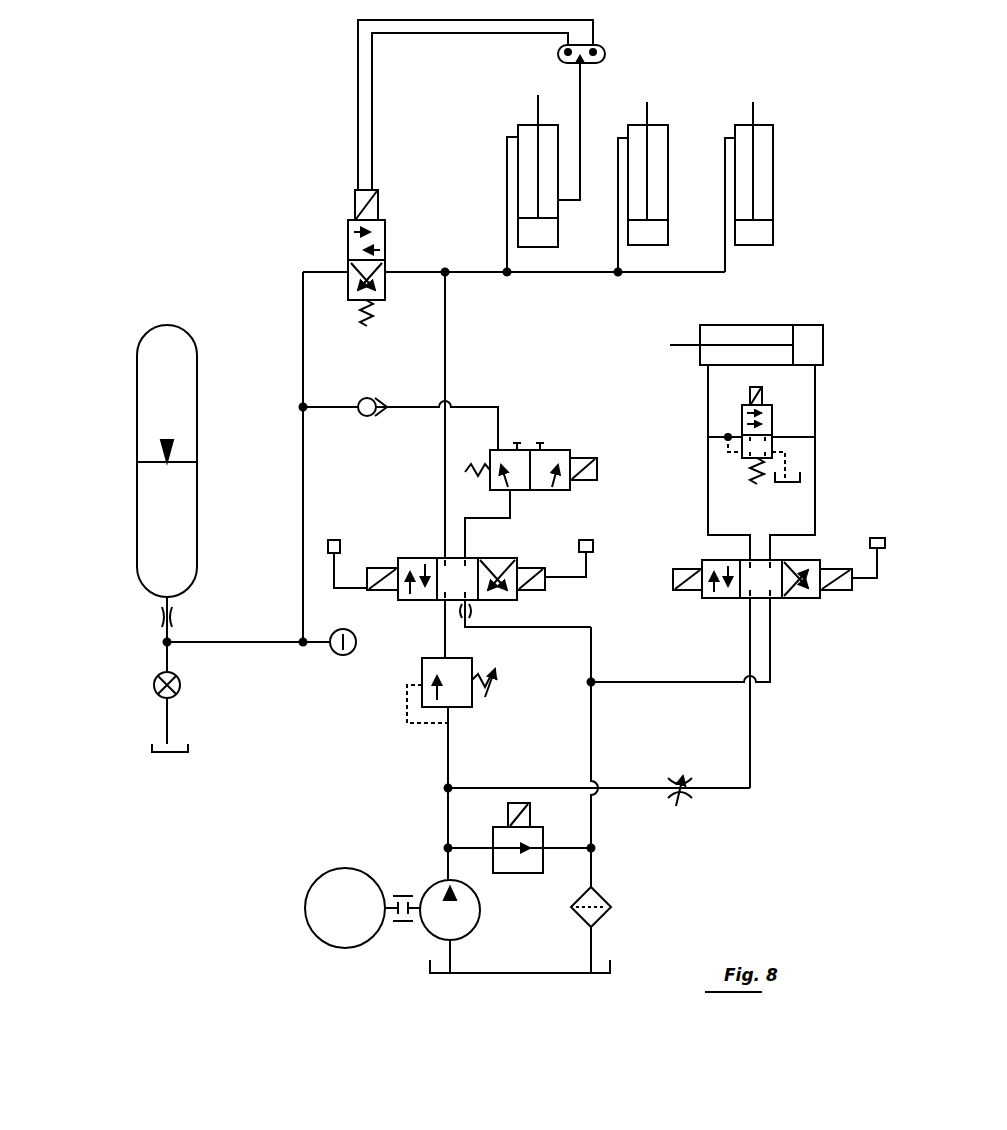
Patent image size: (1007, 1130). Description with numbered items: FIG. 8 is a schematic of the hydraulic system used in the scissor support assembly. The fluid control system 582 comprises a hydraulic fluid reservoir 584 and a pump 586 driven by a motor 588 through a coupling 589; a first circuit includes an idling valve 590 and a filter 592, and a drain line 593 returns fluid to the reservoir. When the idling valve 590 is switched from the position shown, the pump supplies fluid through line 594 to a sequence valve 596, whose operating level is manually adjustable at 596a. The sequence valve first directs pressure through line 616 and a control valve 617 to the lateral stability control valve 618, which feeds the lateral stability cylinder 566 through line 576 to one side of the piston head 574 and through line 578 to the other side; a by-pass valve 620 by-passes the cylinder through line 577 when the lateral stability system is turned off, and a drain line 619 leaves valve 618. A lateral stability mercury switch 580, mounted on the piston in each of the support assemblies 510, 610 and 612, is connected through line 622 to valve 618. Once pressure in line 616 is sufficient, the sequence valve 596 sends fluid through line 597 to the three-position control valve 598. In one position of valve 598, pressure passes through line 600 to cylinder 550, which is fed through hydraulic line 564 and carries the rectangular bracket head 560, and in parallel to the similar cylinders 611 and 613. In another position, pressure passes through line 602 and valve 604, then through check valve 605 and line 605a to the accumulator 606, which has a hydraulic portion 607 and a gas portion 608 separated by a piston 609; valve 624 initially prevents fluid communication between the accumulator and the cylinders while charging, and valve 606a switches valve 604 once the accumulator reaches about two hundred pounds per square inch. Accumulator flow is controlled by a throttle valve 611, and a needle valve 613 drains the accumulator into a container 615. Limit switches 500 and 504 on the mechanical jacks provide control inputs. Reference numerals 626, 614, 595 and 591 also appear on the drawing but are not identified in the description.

The limit switch 500 is at (558, 52).
The limit switch 504 is at (605, 50).
The cylinder 550 is at (529, 125).
The hydraulic line 564 is at (507, 172).
The throttle valve 611 is at (641, 125).
The needle valve 613 is at (745, 125).
The rectangular bracket head 560 is at (753, 190).
The scissor support assembly 612 is at (760, 257).
The scissor support assembly 610 is at (660, 282).
The scissor support assembly 510 is at (546, 281).
The vertical cylinder 566 is at (749, 325).
The piston head 574 is at (811, 325).
The solenoid 626 is at (379, 212).
The valve 624 is at (386, 249).
The accumulator line 614 is at (303, 311).
The line 600 is at (447, 332).
The accumulator 606 is at (214, 398).
The gas portion 608 is at (197, 425).
The piston 609 is at (184, 462).
The hydraulic portion 607 is at (172, 568).
The check valve 605 is at (374, 399).
The line 605a is at (304, 461).
The valve 604 is at (553, 450).
The line 602 is at (511, 509).
The by-pass valve 620 is at (742, 418).
The line 576 is at (816, 394).
The line 577 is at (792, 437).
The hydraulic fluid line 578 is at (708, 482).
The lateral stability mercury switch 580 is at (877, 538).
The line 622 is at (868, 578).
The lateral stability control valve 618 is at (800, 599).
The control valve 598 is at (432, 556).
The line 597 is at (445, 628).
The return line 595 is at (592, 656).
The sequence valve 596 is at (472, 705).
The manual adjustment 596a is at (500, 676).
The valve 606a is at (348, 655).
The line 594 is at (447, 763).
The line 616 is at (555, 786).
The drain line 619 is at (666, 684).
The control valve 617 is at (682, 796).
The idling valve 590 is at (498, 827).
The check valve 591 is at (563, 851).
The drain line 593 is at (595, 871).
The filter 592 is at (611, 910).
The pump 586 is at (471, 931).
The motor 588 is at (345, 949).
The coupling 589 is at (403, 925).
The fluid control system 582 is at (294, 964).
The hydraulic fluid reservoir 584 is at (540, 975).
The container 615 is at (190, 749).